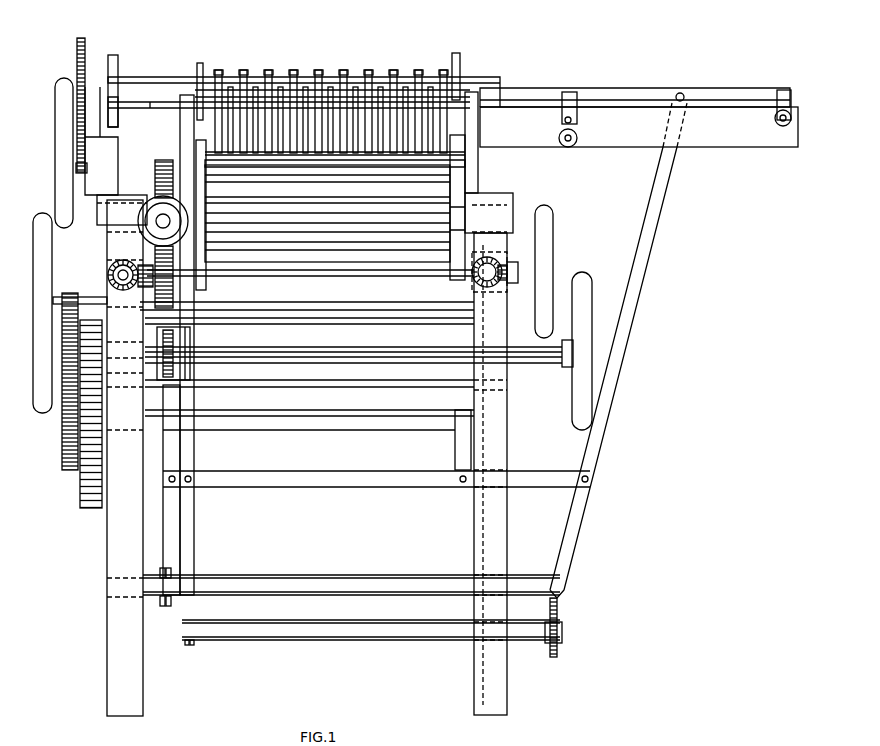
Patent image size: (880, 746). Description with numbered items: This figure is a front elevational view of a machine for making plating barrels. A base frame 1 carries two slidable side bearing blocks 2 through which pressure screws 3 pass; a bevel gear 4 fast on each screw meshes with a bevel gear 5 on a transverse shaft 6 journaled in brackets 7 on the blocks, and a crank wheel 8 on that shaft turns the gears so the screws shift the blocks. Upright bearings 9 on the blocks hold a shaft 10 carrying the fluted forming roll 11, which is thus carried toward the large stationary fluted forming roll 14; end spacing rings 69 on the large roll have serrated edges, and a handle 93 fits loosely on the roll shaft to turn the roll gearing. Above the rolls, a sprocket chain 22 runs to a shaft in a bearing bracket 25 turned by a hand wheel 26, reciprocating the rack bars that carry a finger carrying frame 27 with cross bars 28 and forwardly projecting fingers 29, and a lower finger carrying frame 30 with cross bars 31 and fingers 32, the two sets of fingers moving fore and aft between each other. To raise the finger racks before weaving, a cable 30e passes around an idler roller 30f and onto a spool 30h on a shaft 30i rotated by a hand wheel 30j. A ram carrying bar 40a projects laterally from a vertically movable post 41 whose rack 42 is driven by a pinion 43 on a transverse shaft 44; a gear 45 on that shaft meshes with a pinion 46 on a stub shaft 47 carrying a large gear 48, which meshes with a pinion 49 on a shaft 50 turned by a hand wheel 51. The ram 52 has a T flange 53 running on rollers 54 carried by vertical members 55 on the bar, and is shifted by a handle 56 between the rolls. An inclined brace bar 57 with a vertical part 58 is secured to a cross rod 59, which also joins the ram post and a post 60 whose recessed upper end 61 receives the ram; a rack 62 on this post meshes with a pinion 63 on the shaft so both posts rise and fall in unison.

The base frame 1 is at (107, 551).
The slidable side bearing block 2 is at (110, 248).
The pressure screw 3 is at (108, 272).
The bevel gear 4 is at (110, 260).
The bevel gear 5 is at (518, 283).
The transverse shaft 6 is at (294, 277).
The bracket 7 is at (518, 275).
The crank wheel 8 is at (548, 310).
The upright bearing 9 is at (105, 212).
The shaft 10 is at (200, 195).
The fluted forming roll 11 is at (352, 198).
The stationary fluted forming roll 14 is at (285, 170).
The sprocket chain 22 is at (77, 62).
The bearing bracket 25 is at (97, 157).
The hand wheel 26 is at (62, 102).
The finger carrying frame 27 is at (118, 82).
The cross bar 28 is at (152, 80).
The finger 29 is at (218, 93).
The finger carrying frame 30 is at (113, 97).
The cable 30e is at (170, 524).
The idler roller 30f is at (163, 575).
The spool 30h is at (190, 345).
The shaft 30i is at (330, 352).
The hand wheel 30j is at (573, 368).
The cross bar 31 is at (150, 106).
The finger 32 is at (282, 88).
The ram carrying bar 40a is at (720, 95).
The vertically movable post 41 is at (478, 168).
The rack 42 is at (460, 376).
The pinion 43 is at (458, 440).
The transverse shaft 44 is at (380, 422).
The gear 45 is at (85, 503).
The pinion 46 is at (88, 425).
The stub shaft 47 is at (70, 405).
The large gear 48 is at (66, 468).
The pinion 49 is at (72, 305).
The shaft 50 is at (85, 312).
The hand wheel 51 is at (37, 215).
The ram 52 is at (200, 100).
The T flange 53 is at (633, 103).
The roller 54 is at (560, 118).
The vertical member 55 is at (571, 96).
The handle 56 is at (576, 144).
The inclined brace bar 57 is at (653, 228).
The vertical part 58 is at (562, 616).
The cross rod 59 is at (397, 638).
The post 60 is at (190, 545).
The upper end 61 is at (183, 125).
The rack 62 is at (176, 465).
The pinion 63 is at (173, 438).
The end spacing ring 69 is at (200, 163).
The handle 93 is at (140, 225).